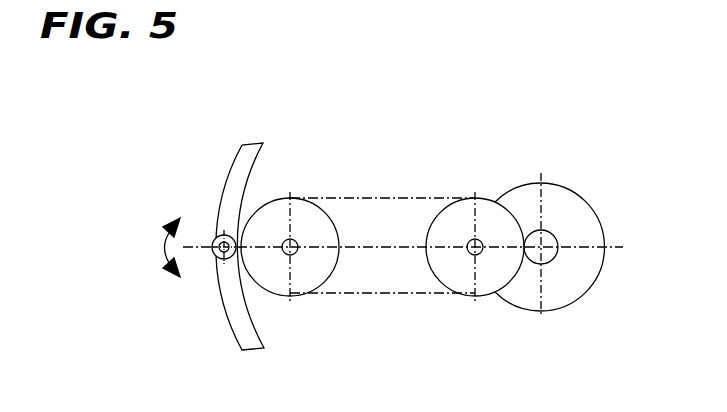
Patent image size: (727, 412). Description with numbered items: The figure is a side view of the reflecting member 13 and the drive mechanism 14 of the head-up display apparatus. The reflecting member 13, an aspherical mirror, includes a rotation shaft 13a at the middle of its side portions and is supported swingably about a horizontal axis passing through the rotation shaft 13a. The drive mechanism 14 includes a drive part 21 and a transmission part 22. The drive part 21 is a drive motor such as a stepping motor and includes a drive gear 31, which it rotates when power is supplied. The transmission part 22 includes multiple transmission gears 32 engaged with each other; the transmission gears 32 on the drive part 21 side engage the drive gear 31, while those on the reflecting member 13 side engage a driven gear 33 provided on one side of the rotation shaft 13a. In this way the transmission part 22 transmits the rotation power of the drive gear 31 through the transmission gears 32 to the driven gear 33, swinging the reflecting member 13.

The reflecting member 13 is at (237, 152).
The rotation shaft 13a is at (214, 234).
The drive mechanism 14 is at (382, 227).
The drive part 21 is at (580, 222).
The transmission part 22 is at (373, 192).
The drive gear 31 is at (556, 258).
The transmission gears 32 is at (300, 296).
The driven gear 33 is at (210, 258).